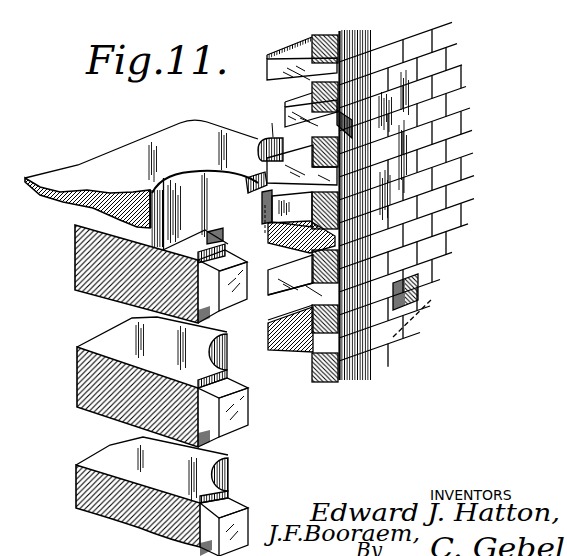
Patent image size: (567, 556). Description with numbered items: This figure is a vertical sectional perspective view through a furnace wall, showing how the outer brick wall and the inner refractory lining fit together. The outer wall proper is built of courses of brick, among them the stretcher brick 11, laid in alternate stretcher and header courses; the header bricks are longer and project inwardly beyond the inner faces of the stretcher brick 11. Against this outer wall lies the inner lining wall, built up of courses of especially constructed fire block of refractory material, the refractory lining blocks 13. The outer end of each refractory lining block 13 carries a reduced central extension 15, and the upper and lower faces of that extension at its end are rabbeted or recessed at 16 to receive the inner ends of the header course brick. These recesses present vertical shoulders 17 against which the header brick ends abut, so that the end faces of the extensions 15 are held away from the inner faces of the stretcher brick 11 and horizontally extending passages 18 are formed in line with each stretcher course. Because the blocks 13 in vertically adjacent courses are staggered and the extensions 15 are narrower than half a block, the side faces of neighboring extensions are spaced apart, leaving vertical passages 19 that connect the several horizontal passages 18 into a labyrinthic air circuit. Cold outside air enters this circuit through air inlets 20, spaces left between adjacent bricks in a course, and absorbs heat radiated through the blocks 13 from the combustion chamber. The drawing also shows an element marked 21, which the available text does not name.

The stretcher brick 11 is at (285, 112).
The refractory lining block 13 is at (128, 154).
The reduced central extension 15 is at (222, 156).
The rabbet 16 is at (262, 198).
The vertical shoulder 17 is at (258, 163).
The horizontal passage 18 is at (332, 211).
The vertical passage 19 is at (212, 230).
The air inlet 20 is at (423, 293).
The anchor bar 21 is at (275, 60).